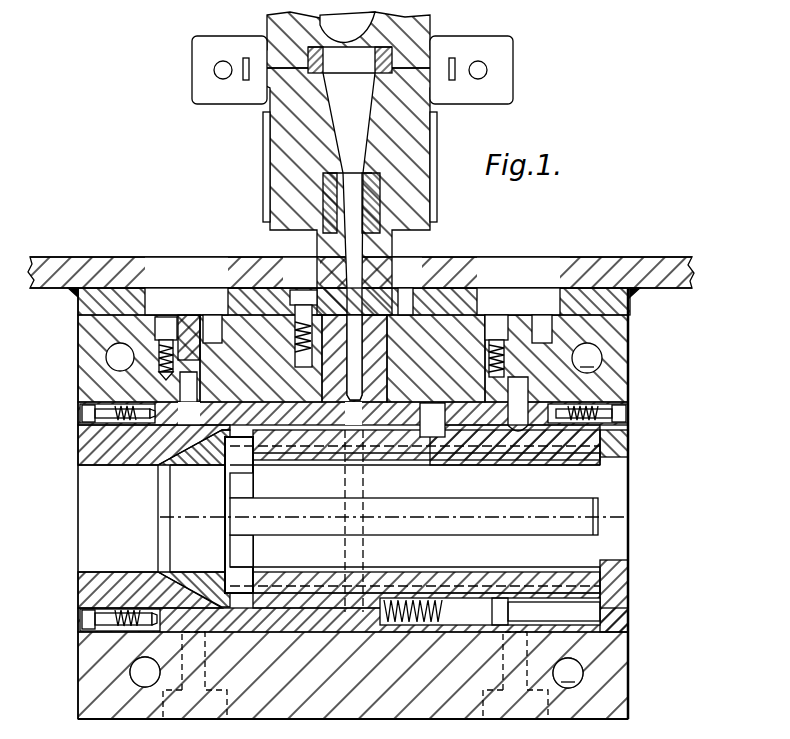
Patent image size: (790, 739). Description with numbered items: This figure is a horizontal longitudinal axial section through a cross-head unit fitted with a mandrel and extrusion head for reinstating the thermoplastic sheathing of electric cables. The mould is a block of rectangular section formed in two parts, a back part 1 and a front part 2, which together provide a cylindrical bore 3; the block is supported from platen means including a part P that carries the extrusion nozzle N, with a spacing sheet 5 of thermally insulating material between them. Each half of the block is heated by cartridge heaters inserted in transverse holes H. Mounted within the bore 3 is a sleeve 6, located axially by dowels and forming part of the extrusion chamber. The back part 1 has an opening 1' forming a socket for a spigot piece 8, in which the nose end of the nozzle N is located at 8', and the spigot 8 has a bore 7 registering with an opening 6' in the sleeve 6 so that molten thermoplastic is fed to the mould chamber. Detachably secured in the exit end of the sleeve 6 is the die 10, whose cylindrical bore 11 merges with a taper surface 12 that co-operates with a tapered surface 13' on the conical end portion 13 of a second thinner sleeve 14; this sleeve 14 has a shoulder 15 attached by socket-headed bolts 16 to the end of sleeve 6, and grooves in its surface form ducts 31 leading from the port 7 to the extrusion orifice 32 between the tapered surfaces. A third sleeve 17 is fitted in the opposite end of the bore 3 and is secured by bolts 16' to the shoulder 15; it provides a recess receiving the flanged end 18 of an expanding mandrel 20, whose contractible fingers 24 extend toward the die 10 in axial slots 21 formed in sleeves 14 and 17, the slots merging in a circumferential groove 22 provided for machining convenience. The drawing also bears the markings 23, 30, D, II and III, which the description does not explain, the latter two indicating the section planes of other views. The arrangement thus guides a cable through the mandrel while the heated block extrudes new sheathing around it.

The extrusion nozzle N is at (258, 190).
The platen part P is at (82, 268).
The back part 1 is at (121, 358).
The opening in back part 1' is at (303, 317).
The front part 2 is at (82, 649).
The cylindrical bore 3 is at (628, 388).
The spacing sheet 5 is at (80, 308).
The sleeve 6 is at (207, 395).
The opening in sleeve 6' is at (354, 358).
The bore of spigot 7 is at (378, 403).
The spigot piece 8 is at (435, 358).
The nozzle nose location 8' is at (393, 276).
The die 10 is at (86, 442).
The cylindrical bore of die 11 is at (80, 468).
The taper surface 12 is at (165, 468).
The conical end portion 13 is at (194, 518).
The conically tapered surface 13' is at (194, 518).
The second sleeve 14 is at (330, 455).
The shoulder 15 is at (440, 418).
The socket-headed bolts 16 is at (331, 350).
The bolts 16' is at (353, 615).
The third sleeve 17 is at (530, 394).
The flanged end 18 is at (615, 592).
The expanding mandrel 20 is at (508, 498).
The axial slots 21 is at (406, 460).
The circumferential groove 22 is at (240, 592).
The flange step 23 is at (240, 572).
The contractible fingers 24 is at (268, 492).
The insert block 30 is at (261, 358).
The ducts 31 is at (353, 413).
The extrusion orifice 32 is at (157, 444).
The transverse holes H is at (118, 360).
The direction of motion D is at (468, 517).
The section line II is at (446, 232).
The section line III is at (275, 404).